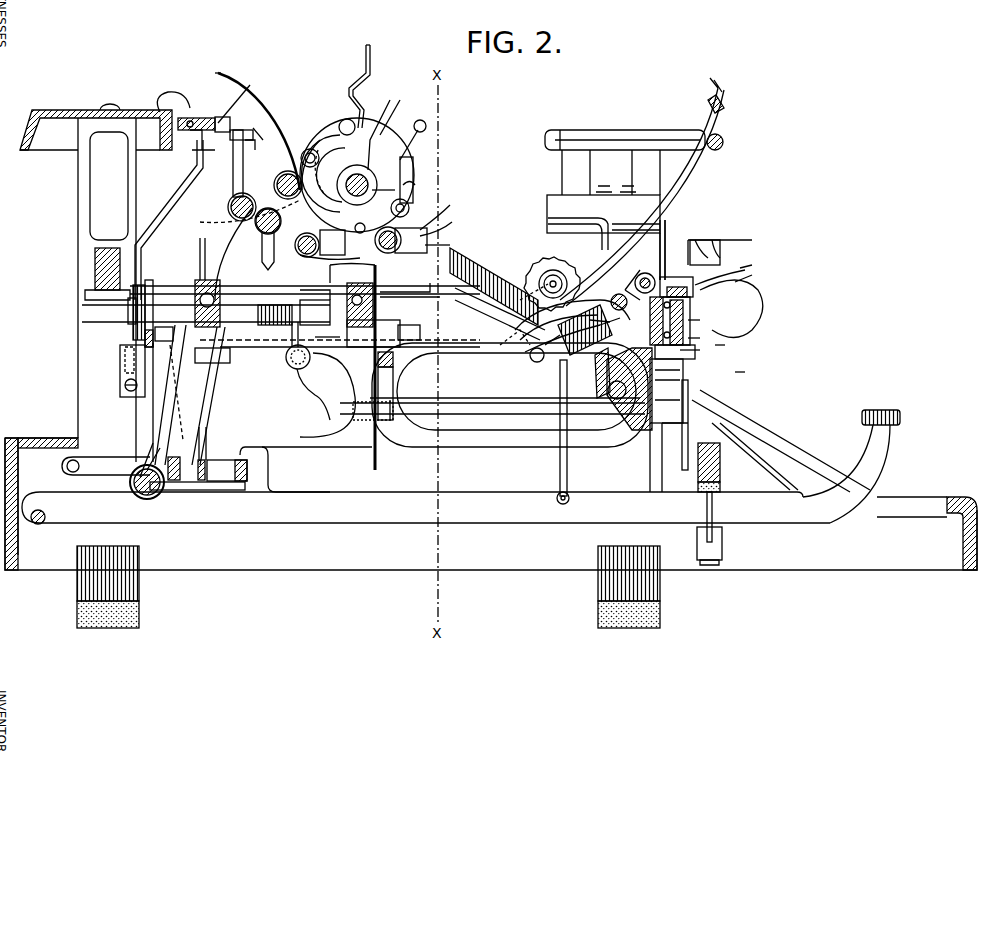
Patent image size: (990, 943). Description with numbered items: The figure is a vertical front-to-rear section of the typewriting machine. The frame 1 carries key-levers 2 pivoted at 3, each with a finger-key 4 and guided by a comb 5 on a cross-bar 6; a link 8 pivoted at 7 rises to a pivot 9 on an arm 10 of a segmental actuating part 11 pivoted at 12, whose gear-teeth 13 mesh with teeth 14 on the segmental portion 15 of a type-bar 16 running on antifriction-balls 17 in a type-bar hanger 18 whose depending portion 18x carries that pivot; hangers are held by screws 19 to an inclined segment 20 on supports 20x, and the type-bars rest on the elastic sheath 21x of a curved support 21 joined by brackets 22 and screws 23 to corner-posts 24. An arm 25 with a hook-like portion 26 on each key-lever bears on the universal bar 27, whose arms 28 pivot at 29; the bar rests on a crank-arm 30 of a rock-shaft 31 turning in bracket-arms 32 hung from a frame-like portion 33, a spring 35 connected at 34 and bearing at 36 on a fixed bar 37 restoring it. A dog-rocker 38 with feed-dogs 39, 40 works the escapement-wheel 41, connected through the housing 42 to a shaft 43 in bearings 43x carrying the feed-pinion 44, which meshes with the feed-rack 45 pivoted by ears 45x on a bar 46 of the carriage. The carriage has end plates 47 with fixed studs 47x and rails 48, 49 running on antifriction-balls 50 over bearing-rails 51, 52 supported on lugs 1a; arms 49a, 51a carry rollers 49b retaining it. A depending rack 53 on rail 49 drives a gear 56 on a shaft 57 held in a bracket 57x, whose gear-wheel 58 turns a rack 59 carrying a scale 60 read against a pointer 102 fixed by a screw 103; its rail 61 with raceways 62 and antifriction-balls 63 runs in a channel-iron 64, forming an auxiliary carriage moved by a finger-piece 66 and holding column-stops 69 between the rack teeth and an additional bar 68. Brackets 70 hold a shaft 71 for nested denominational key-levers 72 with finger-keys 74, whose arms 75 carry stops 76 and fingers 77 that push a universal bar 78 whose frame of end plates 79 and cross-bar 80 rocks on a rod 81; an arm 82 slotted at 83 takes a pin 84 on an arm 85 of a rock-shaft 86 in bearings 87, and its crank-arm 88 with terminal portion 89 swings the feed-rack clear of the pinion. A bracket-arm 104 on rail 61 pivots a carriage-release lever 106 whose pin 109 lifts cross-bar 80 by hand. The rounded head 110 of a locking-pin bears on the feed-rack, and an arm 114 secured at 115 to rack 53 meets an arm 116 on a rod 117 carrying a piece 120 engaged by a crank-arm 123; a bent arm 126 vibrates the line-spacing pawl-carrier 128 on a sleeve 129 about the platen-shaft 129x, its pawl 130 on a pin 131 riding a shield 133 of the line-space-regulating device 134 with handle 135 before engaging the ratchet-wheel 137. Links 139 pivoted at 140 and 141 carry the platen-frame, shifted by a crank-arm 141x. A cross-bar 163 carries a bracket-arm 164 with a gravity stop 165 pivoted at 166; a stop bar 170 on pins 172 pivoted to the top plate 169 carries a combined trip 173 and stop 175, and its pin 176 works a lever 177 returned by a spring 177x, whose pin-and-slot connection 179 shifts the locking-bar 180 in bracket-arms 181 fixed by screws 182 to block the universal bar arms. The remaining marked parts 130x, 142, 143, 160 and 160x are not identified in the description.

The frame 1 is at (491, 533).
The lugs 1a is at (410, 328).
The key-levers 2 is at (426, 507).
The pivot 3 is at (45, 517).
The finger-key 4 is at (878, 410).
The comb 5 is at (712, 507).
The cross-bar 6 is at (720, 470).
The pivot 7 is at (561, 504).
The link 8 is at (560, 468).
The pivot 9 is at (560, 350).
The arm 10 is at (540, 358).
The segmental actuating part 11 is at (512, 339).
The pivot 12 is at (530, 357).
The gear-teeth 13 is at (495, 320).
The teeth 14 is at (550, 273).
The segmental portion 15 is at (539, 298).
The type-bar 16 is at (668, 200).
The antifriction-balls 17 is at (553, 270).
The type-bar hanger 18 is at (572, 318).
The depending portion 18x is at (591, 373).
The screws 19 is at (593, 330).
The inclined segment 20 is at (494, 285).
The inclined brackets or supports 20x is at (605, 385).
The curved support 21 is at (723, 142).
The elastic sheath 21x is at (727, 97).
The brackets 22 is at (625, 162).
The screws 23 is at (630, 186).
The corner-posts 24 is at (606, 237).
The upwardly-extending arm 25 is at (268, 478).
The hook-like portion 26 is at (250, 447).
The universal bar 27 is at (227, 470).
The rearwardly-extending arms 28 is at (106, 466).
The pivot 29 is at (67, 466).
The crank-arm 30 is at (220, 490).
The rock-shaft 31 is at (150, 488).
The bracket-arms 32 is at (222, 375).
The frame-like portion 33 is at (258, 348).
The spring connection 34 is at (150, 456).
The spring 35 is at (130, 485).
The bearing point 36 is at (170, 395).
The fixed bar 37 is at (180, 462).
The dog-rocker 38 is at (136, 414).
The feed-dog 39 is at (125, 357).
The feed-dog 40 is at (124, 372).
The escapement-wheel 41 is at (156, 305).
The housing 42 is at (133, 318).
The shaft 43 is at (170, 297).
The bearings 43x is at (271, 306).
The feed-pinion 44 is at (326, 341).
The feed-rack 45 is at (262, 262).
The ears 45x is at (295, 251).
The bar 46 is at (324, 244).
The end plates 47 is at (233, 254).
The fixed studs 47x is at (239, 213).
The rail 48 is at (207, 293).
The rail 49 is at (380, 272).
The arm 49a is at (311, 350).
The rollers 49b is at (191, 256).
The antifriction-balls 50 is at (214, 299).
The bearing-rail 51 is at (212, 356).
The arm 51a is at (158, 293).
The bearing-rail 52 is at (372, 355).
The depending rack 53 is at (400, 317).
The gear 56 is at (375, 470).
The shaft 57 is at (528, 414).
The bracket 57x is at (399, 393).
The gear-wheel 58 is at (680, 470).
The rack 59 is at (751, 262).
The scale 60 is at (700, 336).
The rail 61 is at (703, 320).
The raceways 62 is at (727, 345).
The antifriction-balls 63 is at (672, 308).
The channel-iron 64 is at (741, 280).
The finger-piece 66 is at (731, 309).
The additional bar 68 is at (668, 277).
The column-stops 69 is at (720, 279).
The brackets 70 is at (660, 321).
The shaft 71 is at (643, 275).
The denominational key-levers 72 is at (712, 252).
The finger-key 74 is at (735, 240).
The rearwardly-extending arms 75 is at (690, 250).
The projection 76 is at (707, 236).
The finger 77 is at (628, 285).
The universal bar 78 is at (609, 301).
The end plates 79 is at (600, 318).
The cross-bar 80 is at (702, 347).
The rock-shaft 81 is at (622, 418).
The rearwardly-directed arm 82 is at (470, 398).
The slot 83 is at (380, 420).
The pin 84 is at (392, 420).
The arm 85 is at (333, 408).
The rock-shaft 86 is at (309, 385).
The bearings 87 is at (288, 366).
The crank-arm 88 is at (302, 308).
The terminal portion 89 is at (305, 287).
The pointer 102 is at (722, 392).
The screw 103 is at (730, 456).
The depending bracket-arm 104 is at (692, 355).
The carriage-release lever 106 is at (746, 370).
The pin 109 is at (666, 425).
The rounded head 110 is at (346, 305).
The arm 114 is at (411, 279).
The securing point 115 is at (410, 292).
The laterally-extending arm 116 is at (417, 241).
The rod 117 is at (447, 221).
The laterally-projecting piece 120 is at (451, 233).
The crank-arm 123 is at (447, 208).
The bent arm 126 is at (375, 220).
The line-spacing pawl-carrier 128 is at (356, 130).
The sleeve 129 is at (372, 168).
The platen-shaft 129x is at (389, 182).
The line-spacing pawl 130 is at (335, 148).
The ring segment 130x is at (303, 160).
The pin 131 is at (375, 127).
The shield 133 is at (346, 105).
The line-space-regulating device 134 is at (417, 160).
The finger-piece or handle 135 is at (418, 132).
The line-spacing ratchet-wheel 137 is at (424, 183).
The links 139 is at (300, 158).
The pivot 140 is at (228, 207).
The pivot 141 is at (409, 208).
The crank-arm 141x is at (253, 226).
The lever 142 is at (400, 108).
The rod 143 is at (383, 42).
The spring 160 is at (292, 150).
The spring end 160x is at (230, 59).
The cross-bar 163 is at (277, 183).
The upright bracket-arm 164 is at (266, 129).
The gravity stop 165 is at (233, 178).
The pivot 166 is at (265, 145).
The top plate 169 is at (70, 110).
The stop bar 170 is at (222, 117).
The pins 172 is at (249, 96).
The combined trip or stop 173 is at (190, 118).
The stop 175 is at (242, 130).
The pin 176 is at (207, 150).
The lever 177 is at (180, 190).
The spring 177x is at (95, 300).
The pin-and-slot connection 179 is at (200, 482).
The locking-bar 180 is at (207, 450).
The depending bracket-arms 181 is at (188, 378).
The screws 182 is at (165, 334).